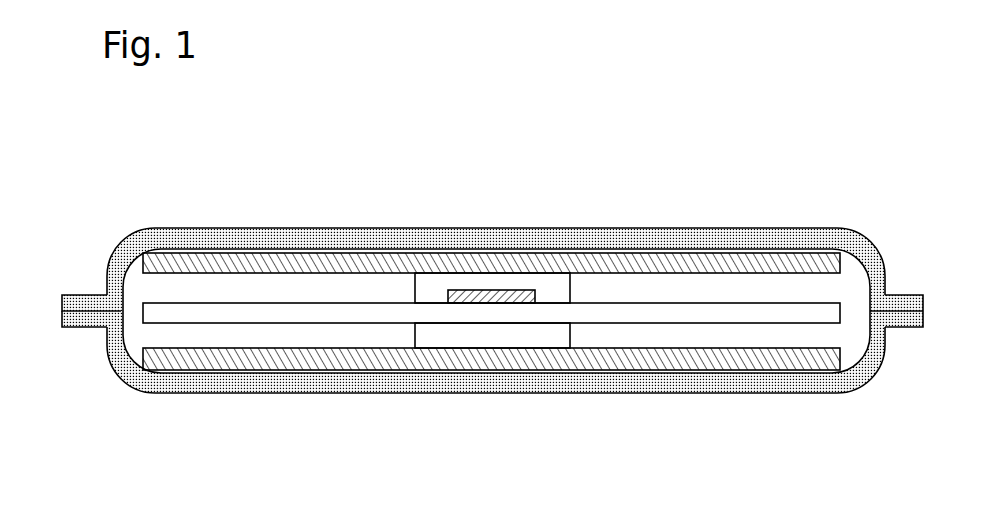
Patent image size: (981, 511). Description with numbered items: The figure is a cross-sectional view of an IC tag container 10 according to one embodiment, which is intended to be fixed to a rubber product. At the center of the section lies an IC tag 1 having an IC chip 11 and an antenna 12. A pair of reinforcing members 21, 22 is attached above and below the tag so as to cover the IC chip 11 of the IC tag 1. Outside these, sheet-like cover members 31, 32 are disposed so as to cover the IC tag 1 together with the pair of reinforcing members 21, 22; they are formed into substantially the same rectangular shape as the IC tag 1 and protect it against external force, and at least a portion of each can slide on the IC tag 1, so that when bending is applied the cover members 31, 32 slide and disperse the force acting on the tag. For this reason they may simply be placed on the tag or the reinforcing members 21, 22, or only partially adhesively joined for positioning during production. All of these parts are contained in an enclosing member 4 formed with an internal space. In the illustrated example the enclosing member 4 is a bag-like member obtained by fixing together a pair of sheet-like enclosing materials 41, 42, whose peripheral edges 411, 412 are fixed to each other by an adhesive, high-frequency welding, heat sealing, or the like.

The IC tag container 10 is at (168, 188).
The enclosing member 4 is at (886, 244).
The sheet-like enclosing material 41 is at (712, 233).
The sheet-like enclosing material 42 is at (727, 388).
The peripheral edge 411 is at (97, 302).
The peripheral edge 412 is at (87, 323).
The IC tag 1 is at (853, 324).
The IC chip 11 is at (505, 292).
The antenna 12 is at (200, 313).
The reinforcing member 21 is at (427, 288).
The reinforcing member 22 is at (543, 336).
The cover member 31 is at (310, 266).
The cover member 32 is at (258, 360).